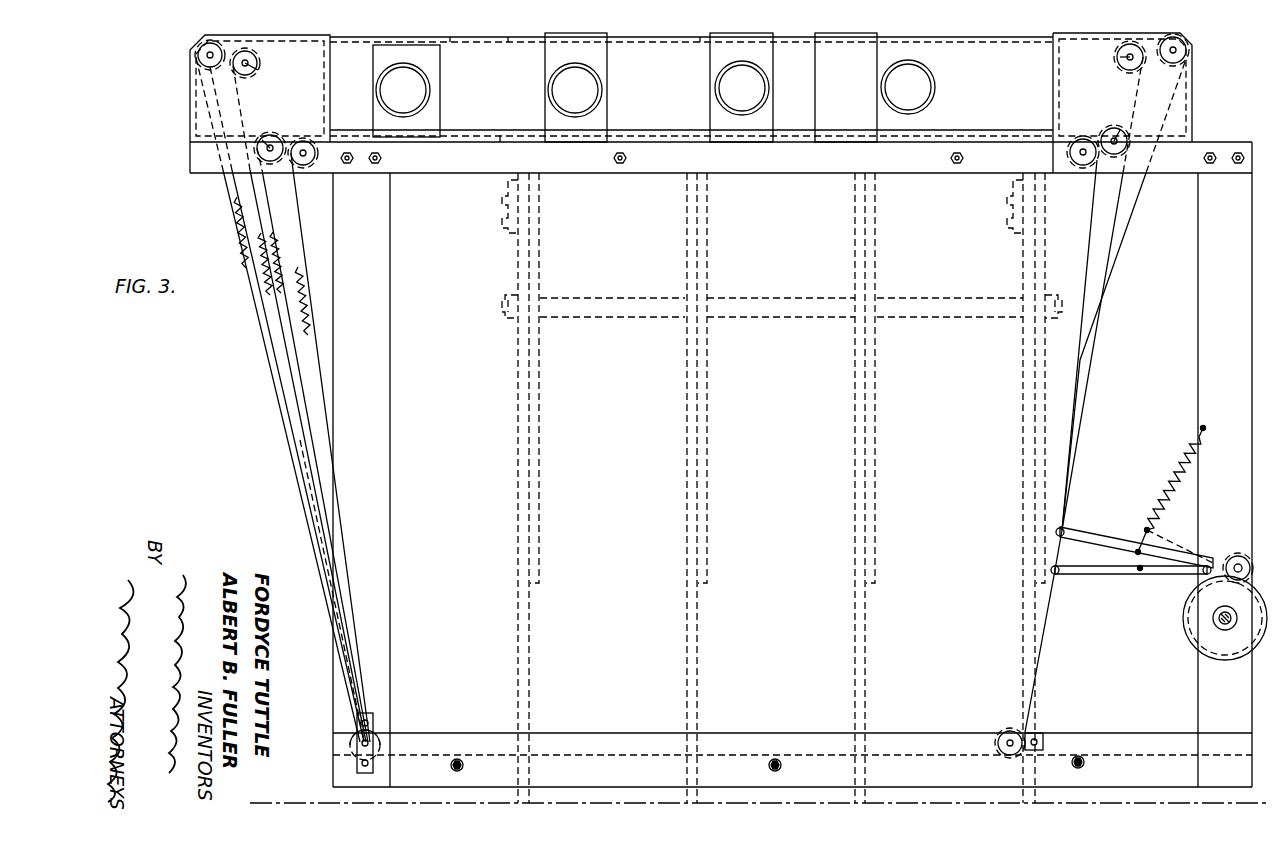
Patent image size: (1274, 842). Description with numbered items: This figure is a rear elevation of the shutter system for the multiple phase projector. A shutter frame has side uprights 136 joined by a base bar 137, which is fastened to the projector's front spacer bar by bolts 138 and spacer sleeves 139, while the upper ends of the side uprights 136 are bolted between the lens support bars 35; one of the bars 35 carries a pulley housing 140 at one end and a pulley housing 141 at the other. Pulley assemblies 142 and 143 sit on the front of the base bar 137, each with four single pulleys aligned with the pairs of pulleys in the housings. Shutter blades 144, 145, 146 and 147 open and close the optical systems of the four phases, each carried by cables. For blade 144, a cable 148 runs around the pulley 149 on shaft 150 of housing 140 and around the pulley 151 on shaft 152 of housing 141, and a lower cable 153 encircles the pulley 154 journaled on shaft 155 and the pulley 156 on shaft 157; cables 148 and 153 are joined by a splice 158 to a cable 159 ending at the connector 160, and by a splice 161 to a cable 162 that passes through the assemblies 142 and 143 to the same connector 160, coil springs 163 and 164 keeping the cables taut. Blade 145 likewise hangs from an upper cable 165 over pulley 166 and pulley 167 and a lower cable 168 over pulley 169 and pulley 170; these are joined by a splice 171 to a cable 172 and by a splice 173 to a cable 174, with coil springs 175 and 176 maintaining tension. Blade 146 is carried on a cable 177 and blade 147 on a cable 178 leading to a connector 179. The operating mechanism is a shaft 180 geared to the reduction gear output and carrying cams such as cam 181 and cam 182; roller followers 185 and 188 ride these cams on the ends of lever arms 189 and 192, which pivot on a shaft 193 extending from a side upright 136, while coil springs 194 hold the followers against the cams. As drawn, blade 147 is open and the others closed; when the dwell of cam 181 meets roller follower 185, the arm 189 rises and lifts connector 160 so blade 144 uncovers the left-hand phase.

The lens support bar 35 is at (420, 173).
The side upright 136 is at (1198, 383).
The base bar 137 is at (920, 733).
The bolt 138 is at (458, 758).
The spacer sleeve 139 is at (463, 760).
The pulley housing 140 is at (190, 133).
The pulley housing 141 is at (1194, 82).
The pulley assembly 142 is at (373, 720).
The pulley assembly 143 is at (1010, 732).
The shutter blade 144 is at (373, 74).
The shutter blade 145 is at (603, 66).
The shutter blade 146 is at (714, 100).
The shutter blade 147 is at (818, 77).
The cable 148 is at (452, 44).
The pulley 149 is at (252, 66).
The shaft 150 is at (250, 68).
The pulley 151 is at (1118, 68).
The shaft 152 is at (1120, 58).
The lower cable 153 is at (495, 135).
The pulley 154 is at (275, 142).
The shaft 155 is at (268, 138).
The pulley 156 is at (1120, 130).
The shaft 157 is at (1118, 136).
The splice 158 is at (1112, 237).
The cable 159 is at (1095, 340).
The connector 160 is at (1057, 578).
The splice 161 is at (287, 408).
The cable 162 is at (292, 447).
The coil spring 163 is at (262, 250).
The coil spring 164 is at (276, 240).
The upper cable 165 is at (508, 40).
The pulley 166 is at (197, 57).
The pulley 167 is at (1186, 47).
The lower cable 168 is at (500, 135).
The pulley 169 is at (303, 166).
The pulley 170 is at (1082, 140).
The splice 171 is at (1080, 360).
The cable 172 is at (1075, 395).
The splice 173 is at (300, 485).
The cable 174 is at (306, 520).
The coil spring 175 is at (238, 210).
The coil spring 176 is at (300, 290).
The cable 177 is at (700, 40).
The cable 178 is at (990, 40).
The connector 179 is at (1062, 522).
The shaft 180 is at (1215, 628).
The cam 181 is at (1190, 640).
The cam 182 is at (1186, 625).
The roller follower 185 is at (1240, 555).
The roller follower 188 is at (1233, 560).
The lever arm 189 is at (1110, 575).
The lever arm 192 is at (1115, 540).
The shaft 193 is at (1205, 572).
The coil spring 194 is at (1172, 470).